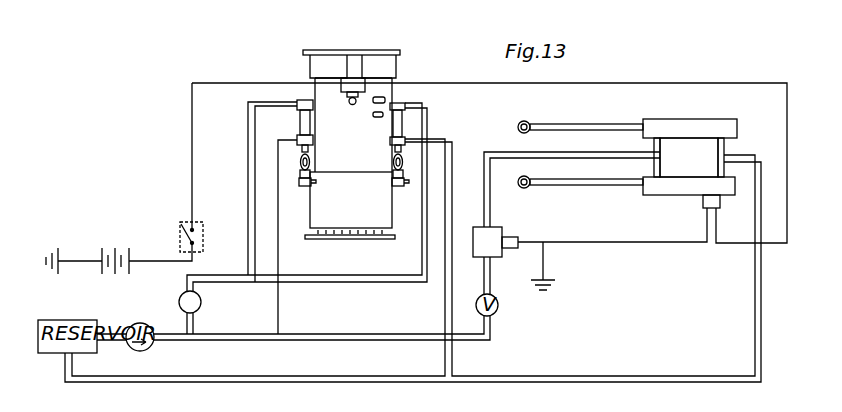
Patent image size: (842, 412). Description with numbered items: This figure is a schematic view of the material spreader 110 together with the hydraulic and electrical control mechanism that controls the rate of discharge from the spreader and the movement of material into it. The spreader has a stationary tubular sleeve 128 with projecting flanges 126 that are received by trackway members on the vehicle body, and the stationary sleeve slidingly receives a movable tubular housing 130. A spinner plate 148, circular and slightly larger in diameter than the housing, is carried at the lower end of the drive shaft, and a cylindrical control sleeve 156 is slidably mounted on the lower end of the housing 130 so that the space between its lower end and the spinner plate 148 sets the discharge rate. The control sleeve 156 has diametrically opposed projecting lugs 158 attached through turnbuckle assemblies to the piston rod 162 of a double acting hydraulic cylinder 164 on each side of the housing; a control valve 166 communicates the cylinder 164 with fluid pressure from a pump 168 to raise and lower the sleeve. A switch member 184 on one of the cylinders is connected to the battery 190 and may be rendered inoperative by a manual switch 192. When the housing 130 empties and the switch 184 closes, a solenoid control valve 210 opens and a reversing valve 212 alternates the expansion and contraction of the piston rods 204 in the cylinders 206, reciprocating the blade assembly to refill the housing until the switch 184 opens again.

The material spreader 110 is at (296, 59).
The projecting flanges 126 is at (400, 53).
The stationary tubular sleeve 128 is at (330, 63).
The switch member 184 is at (354, 80).
The movable tubular sleeve or housing 130 is at (315, 95).
The hydraulic cylinder 164 is at (400, 116).
The piston rod 162 is at (400, 152).
The projecting lugs 158 is at (398, 184).
The cylindrical control sleeve 156 is at (390, 214).
The spinner plate 148 is at (360, 240).
The control valve 166 is at (201, 302).
The pump 168 is at (142, 325).
The battery 190 is at (120, 247).
The manual switch 192 is at (188, 224).
The solenoid control valve 210 is at (497, 233).
The piston rods 204 is at (595, 125).
The cylinders 206 is at (692, 125).
The reversing valve 212 is at (702, 199).